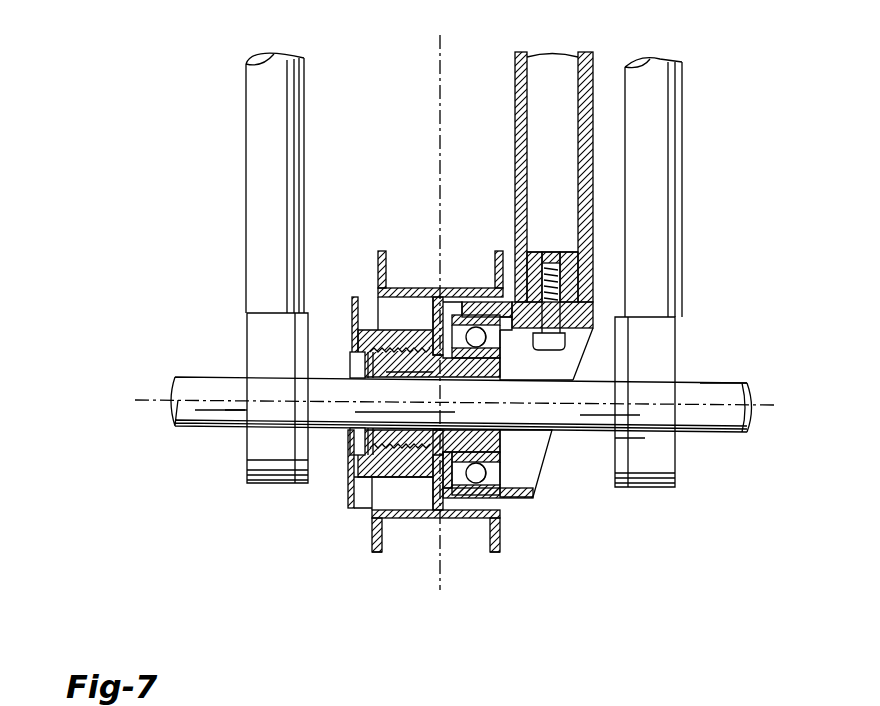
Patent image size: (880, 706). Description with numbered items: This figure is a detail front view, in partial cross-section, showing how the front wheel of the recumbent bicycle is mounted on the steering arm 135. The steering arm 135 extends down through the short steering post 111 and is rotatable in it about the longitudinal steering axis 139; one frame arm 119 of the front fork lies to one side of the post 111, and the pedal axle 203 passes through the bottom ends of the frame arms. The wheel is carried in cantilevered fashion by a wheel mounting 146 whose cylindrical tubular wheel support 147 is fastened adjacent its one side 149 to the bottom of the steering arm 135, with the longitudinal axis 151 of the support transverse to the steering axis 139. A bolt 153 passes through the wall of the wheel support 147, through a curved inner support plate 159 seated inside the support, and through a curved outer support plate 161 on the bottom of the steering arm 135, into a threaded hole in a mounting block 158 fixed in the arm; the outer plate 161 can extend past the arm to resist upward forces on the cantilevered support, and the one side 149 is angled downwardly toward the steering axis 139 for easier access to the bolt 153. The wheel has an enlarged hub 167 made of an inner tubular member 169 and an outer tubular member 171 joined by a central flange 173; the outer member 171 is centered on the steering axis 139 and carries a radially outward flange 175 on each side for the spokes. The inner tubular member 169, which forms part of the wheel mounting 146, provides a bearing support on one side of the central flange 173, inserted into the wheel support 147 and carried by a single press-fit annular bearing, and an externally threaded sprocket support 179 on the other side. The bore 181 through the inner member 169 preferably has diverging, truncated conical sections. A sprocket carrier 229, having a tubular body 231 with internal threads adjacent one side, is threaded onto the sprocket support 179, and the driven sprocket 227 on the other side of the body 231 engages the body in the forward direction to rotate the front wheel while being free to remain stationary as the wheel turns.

The steering post 111 is at (247, 90).
The frame arm 119 is at (686, 133).
The steering arm 135 is at (593, 100).
The steering axis 139 is at (438, 47).
The wheel mounting 146 is at (565, 447).
The wheel support 147 is at (535, 495).
The one side of wheel support 149 is at (537, 472).
The longitudinal axis of wheel support 151 is at (768, 407).
The bolt 153 is at (557, 340).
The mounting block 158 is at (546, 265).
The inner support plate 159 is at (587, 330).
The outer support plate 161 is at (593, 310).
The hub 167 is at (457, 542).
The inner tubular member 169 is at (372, 433).
The outer tubular member 171 is at (428, 286).
The central flange 173 is at (378, 292).
The flange 175 is at (377, 553).
The sprocket support 179 is at (480, 478).
The bore 181 is at (393, 375).
The pedal axle 203 is at (707, 380).
The driven sprocket 227 is at (362, 335).
The sprocket carrier 229 is at (365, 480).
The tubular body 231 is at (356, 302).